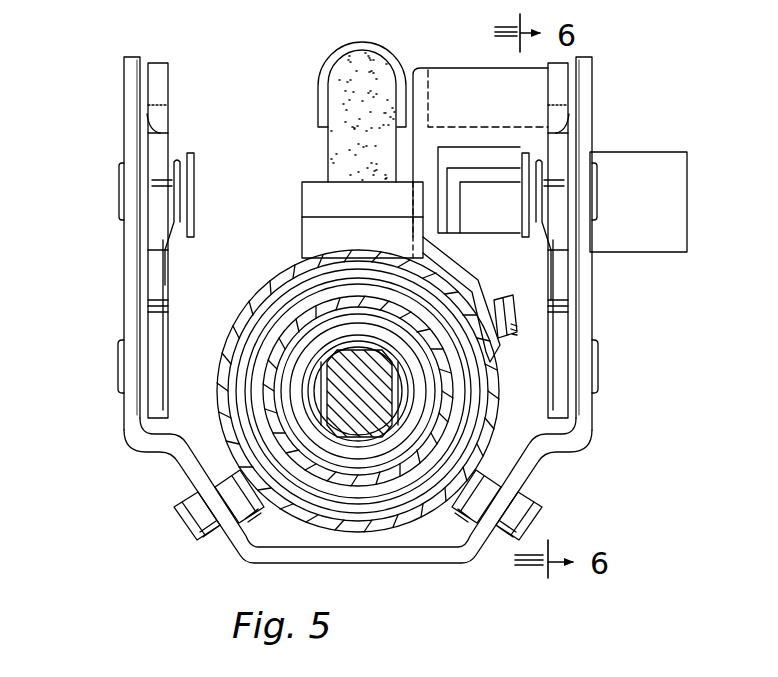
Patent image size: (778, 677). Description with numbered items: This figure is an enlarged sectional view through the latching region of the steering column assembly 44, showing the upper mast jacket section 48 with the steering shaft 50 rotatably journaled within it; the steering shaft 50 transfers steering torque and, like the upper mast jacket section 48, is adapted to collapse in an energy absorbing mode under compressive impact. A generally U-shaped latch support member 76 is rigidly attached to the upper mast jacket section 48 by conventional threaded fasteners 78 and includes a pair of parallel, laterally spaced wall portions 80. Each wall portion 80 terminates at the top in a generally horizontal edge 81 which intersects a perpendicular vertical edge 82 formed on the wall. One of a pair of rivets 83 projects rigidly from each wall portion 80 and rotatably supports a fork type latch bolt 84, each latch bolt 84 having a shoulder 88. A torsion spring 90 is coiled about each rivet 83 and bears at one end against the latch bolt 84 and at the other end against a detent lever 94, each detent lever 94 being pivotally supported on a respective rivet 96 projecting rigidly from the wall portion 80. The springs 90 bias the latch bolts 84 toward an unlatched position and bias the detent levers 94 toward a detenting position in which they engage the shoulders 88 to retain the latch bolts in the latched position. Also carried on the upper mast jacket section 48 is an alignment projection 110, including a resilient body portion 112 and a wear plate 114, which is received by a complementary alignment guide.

The column assembly 44 is at (268, 282).
The upper mast jacket section 48 is at (490, 350).
The steering shaft 50 is at (377, 404).
The latch support member 76 is at (112, 280).
The threaded fasteners 78 is at (200, 500).
The wall portions 80 is at (135, 77).
The horizontal edge 81 is at (130, 173).
The vertical edge 82 is at (133, 135).
The rivets 83 is at (194, 188).
The latch bolts 84 is at (168, 87).
The shoulder 88 is at (147, 120).
The torsion spring 90 is at (176, 168).
The detent levers 94 is at (156, 366).
The rivets 96 is at (119, 360).
The alignment projection 110 is at (315, 95).
The resilient body portion 112 is at (357, 137).
The wear plate 114 is at (385, 50).